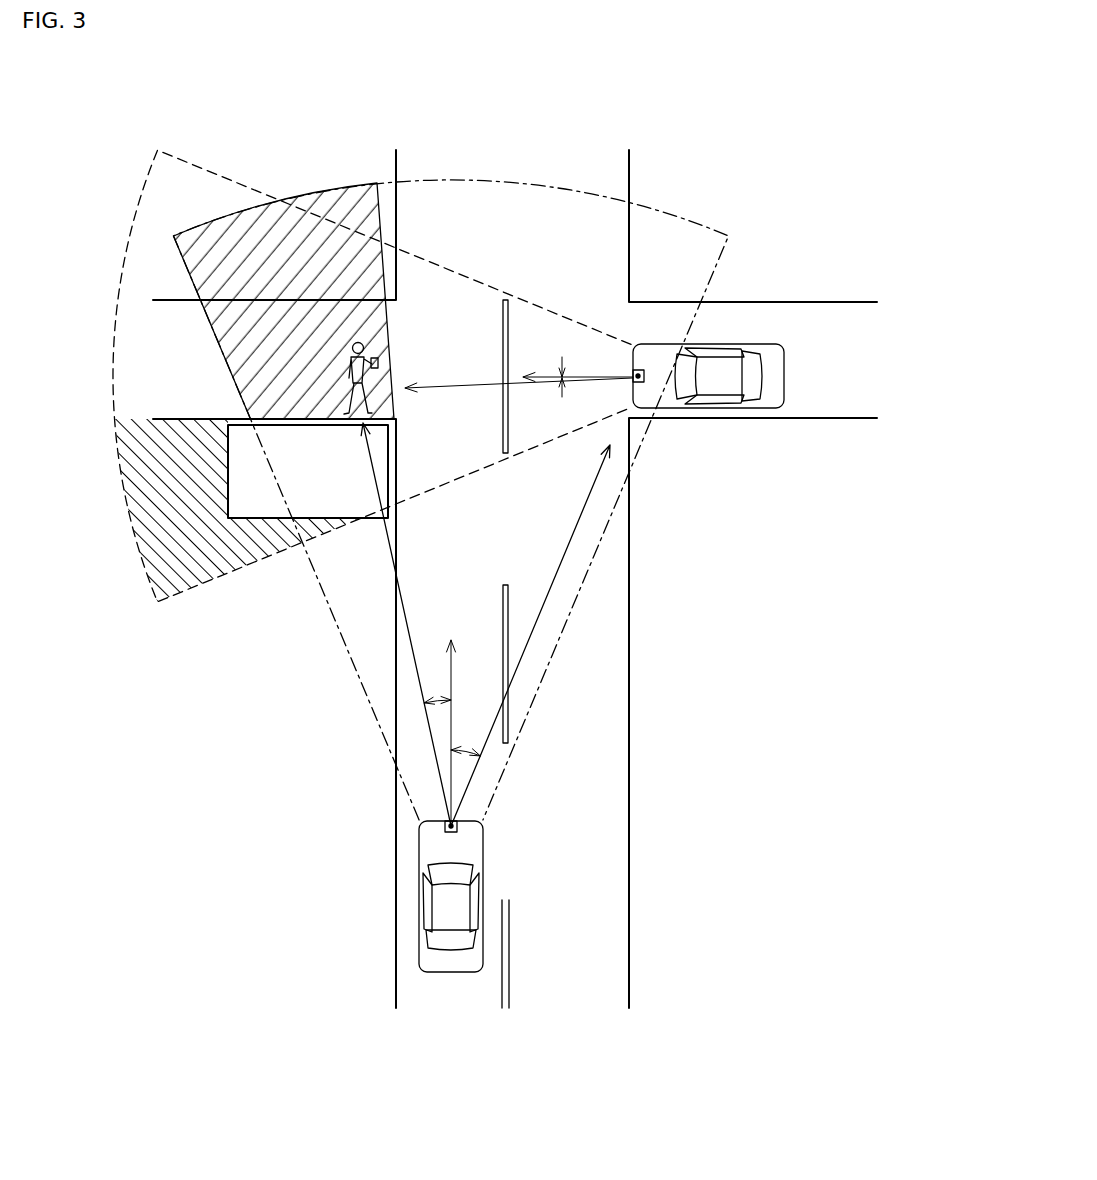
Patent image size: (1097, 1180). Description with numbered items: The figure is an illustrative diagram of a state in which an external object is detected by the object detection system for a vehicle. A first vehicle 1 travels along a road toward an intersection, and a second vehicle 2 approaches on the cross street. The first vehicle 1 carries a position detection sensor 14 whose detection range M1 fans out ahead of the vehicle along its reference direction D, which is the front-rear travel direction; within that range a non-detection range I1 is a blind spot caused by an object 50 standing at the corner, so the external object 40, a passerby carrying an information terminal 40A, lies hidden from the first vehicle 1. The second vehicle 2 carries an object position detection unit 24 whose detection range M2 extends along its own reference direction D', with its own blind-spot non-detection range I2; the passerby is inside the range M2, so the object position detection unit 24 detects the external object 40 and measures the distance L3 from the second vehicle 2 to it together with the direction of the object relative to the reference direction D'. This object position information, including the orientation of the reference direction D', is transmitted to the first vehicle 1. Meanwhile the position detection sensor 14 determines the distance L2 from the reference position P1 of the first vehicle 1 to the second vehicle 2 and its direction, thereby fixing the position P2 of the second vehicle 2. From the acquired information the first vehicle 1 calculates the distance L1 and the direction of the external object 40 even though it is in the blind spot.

The first vehicle 1 is at (432, 962).
The second vehicle 2 is at (768, 355).
The position detection sensor 14 is at (460, 823).
The object position detection unit 24 is at (645, 384).
The external object 40 is at (348, 339).
The information terminal 40A is at (371, 358).
The building / obstacle 50 is at (292, 472).
The detection range of the position detection sensor M1 is at (698, 233).
The detection range of the object position detection unit M2 is at (145, 223).
The non-detection range I1 is at (218, 237).
The non-detection range I2 is at (163, 563).
The reference position of the first vehicle P1 is at (440, 826).
The position of the second vehicle P2 is at (640, 372).
The distance from the first vehicle to the external object L1 is at (406, 624).
The distance from the reference position of the first vehicle to the second vehicle L2 is at (530, 635).
The distance from the second vehicle to the external object L3 is at (519, 398).
The reference direction D is at (451, 720).
The reference direction of the second vehicle D' is at (575, 363).